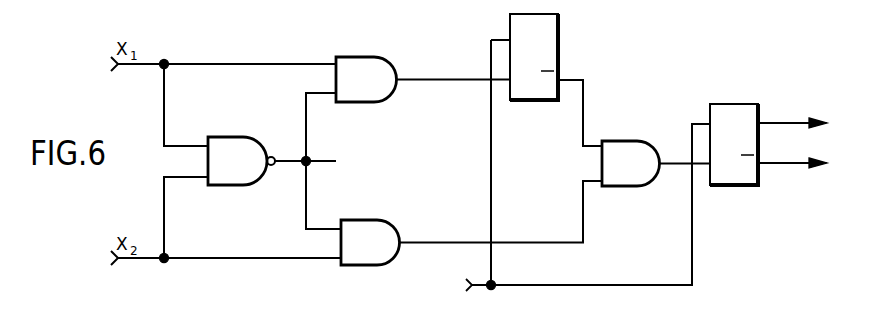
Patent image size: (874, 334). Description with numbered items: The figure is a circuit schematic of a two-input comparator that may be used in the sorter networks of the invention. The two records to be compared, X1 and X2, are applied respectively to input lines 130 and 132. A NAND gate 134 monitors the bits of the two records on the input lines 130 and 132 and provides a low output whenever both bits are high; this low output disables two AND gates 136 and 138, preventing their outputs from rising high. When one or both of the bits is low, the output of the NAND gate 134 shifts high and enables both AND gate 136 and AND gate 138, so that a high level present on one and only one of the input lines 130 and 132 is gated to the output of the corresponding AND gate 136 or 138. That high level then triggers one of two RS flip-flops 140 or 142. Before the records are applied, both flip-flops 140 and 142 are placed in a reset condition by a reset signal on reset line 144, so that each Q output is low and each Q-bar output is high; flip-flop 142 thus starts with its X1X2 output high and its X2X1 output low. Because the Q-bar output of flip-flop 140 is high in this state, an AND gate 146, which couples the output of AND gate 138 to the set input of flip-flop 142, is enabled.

The input line 130 is at (208, 63).
The input line 132 is at (216, 258).
The NAND gate 134 is at (224, 156).
The AND gate 136 is at (377, 73).
The AND gate 138 is at (360, 238).
The RS flip-flop 140 is at (543, 25).
The RS flip-flop 142 is at (730, 108).
The reset line 144 is at (590, 285).
The AND gate 146 is at (620, 160).